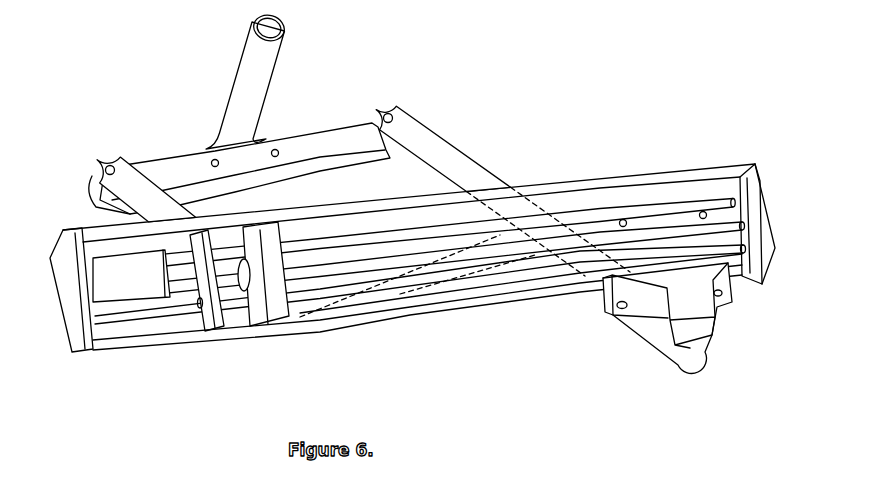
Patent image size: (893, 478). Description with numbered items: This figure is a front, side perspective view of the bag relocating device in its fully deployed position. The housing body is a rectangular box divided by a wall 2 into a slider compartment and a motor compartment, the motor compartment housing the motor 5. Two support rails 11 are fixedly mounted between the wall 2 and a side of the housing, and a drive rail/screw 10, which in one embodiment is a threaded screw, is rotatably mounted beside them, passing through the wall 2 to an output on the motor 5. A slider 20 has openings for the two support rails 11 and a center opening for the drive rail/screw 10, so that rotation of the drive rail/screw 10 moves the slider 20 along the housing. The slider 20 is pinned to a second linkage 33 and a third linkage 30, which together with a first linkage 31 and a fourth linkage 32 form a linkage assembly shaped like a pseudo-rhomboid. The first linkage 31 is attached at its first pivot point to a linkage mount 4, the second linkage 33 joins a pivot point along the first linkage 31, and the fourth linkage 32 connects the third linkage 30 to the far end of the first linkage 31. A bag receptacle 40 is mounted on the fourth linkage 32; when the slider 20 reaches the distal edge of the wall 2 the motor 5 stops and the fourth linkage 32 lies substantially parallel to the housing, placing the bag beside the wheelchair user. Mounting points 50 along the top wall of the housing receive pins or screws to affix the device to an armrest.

The wall 2 is at (213, 275).
The linkage mount 4 is at (703, 308).
The motor 5 is at (107, 290).
The drive rail/screw 10 is at (365, 262).
The support rail 11 is at (493, 230).
The slider 20 is at (271, 312).
The third linkage 30 is at (125, 202).
The first linkage 31 is at (445, 160).
The fourth linkage 32 is at (323, 143).
The second linkage 33 is at (322, 307).
The bag receptacle 40 is at (237, 103).
The mounting points 50 is at (624, 221).